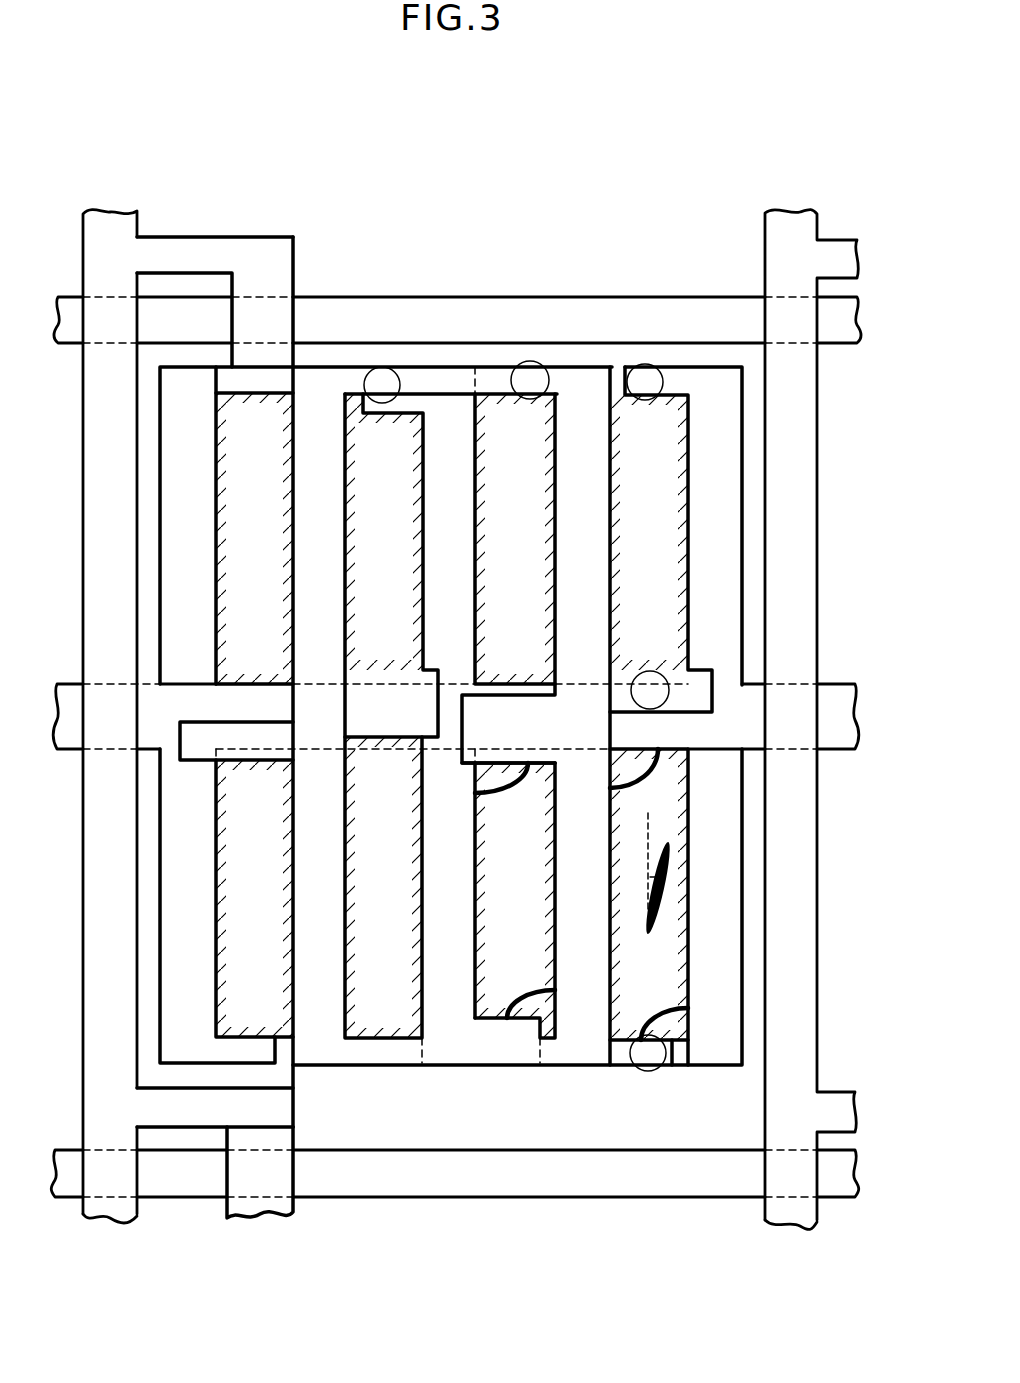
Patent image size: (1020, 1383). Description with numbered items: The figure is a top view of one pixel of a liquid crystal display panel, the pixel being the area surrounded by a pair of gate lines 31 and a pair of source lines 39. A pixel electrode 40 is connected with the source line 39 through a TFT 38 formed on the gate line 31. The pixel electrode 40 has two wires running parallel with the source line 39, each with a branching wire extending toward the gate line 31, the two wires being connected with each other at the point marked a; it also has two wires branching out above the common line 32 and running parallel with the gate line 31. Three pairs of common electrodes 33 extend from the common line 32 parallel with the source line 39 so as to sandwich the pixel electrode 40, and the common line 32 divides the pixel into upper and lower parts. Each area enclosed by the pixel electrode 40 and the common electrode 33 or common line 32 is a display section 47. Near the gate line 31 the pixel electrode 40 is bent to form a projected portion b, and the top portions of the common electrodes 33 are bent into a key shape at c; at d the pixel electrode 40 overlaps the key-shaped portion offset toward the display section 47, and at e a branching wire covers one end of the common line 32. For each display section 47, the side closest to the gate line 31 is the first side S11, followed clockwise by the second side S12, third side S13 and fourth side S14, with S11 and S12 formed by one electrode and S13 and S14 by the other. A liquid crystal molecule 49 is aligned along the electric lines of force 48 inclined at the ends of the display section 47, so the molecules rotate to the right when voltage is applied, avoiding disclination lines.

The gate line 31 is at (535, 318).
The common line 32 is at (728, 720).
The common electrode 33 is at (713, 607).
The TFT 38 is at (283, 318).
The source line 39 is at (108, 243).
The pixel electrode 40 is at (577, 420).
The display section 47 is at (648, 477).
The electric lines of force 48 is at (640, 778).
The liquid crystal molecule 49 is at (668, 907).
The overlap of pixel electrode and key-shaped common electrode portion d is at (381, 367).
The connection of the two pixel electrode wires a is at (512, 390).
The key-shaped bent portion of common electrode c is at (645, 363).
The overlap of branching wire and common line end e is at (669, 692).
The projected portion of pixel electrode b is at (673, 1047).
The first side S11 is at (487, 1020).
The second side S12 is at (475, 920).
The third side S13 is at (510, 760).
The fourth side S14 is at (555, 897).